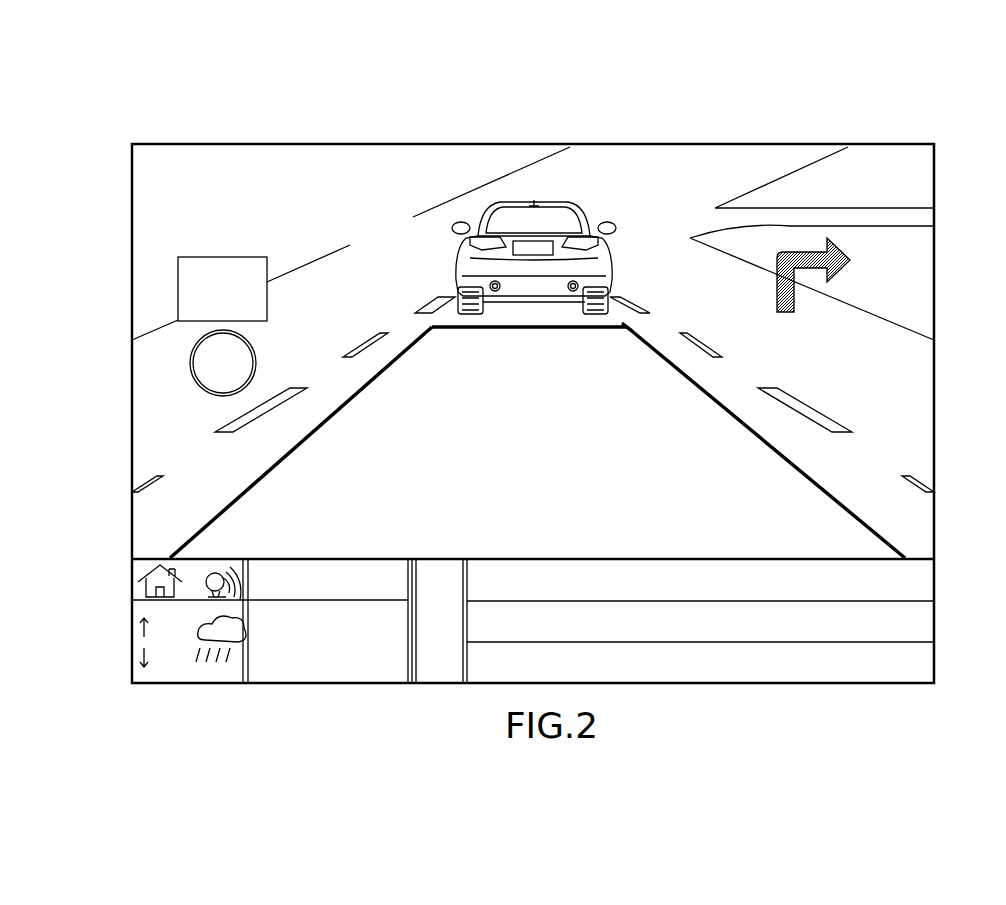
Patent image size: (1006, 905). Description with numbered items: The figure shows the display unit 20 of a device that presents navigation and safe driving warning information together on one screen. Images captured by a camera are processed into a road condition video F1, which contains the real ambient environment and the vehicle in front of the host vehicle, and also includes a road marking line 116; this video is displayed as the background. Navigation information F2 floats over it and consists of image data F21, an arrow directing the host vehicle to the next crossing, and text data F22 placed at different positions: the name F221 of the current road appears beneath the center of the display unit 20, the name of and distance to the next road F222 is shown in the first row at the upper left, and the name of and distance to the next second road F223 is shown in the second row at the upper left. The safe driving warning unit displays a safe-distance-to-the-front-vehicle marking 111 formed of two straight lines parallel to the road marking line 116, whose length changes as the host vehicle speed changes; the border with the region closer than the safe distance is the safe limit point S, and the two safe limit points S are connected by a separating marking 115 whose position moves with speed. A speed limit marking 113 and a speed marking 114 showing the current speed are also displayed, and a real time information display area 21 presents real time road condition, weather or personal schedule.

The display unit 20 is at (905, 143).
The real time information display area 21 is at (247, 657).
The safe-distance-to-the-front-vehicle marking 111 is at (822, 490).
The speed limit marking 113 is at (190, 363).
The speed marking 114 is at (178, 290).
The separating marking 115 is at (553, 330).
The road marking line 116 is at (802, 410).
The safe limit point S is at (618, 327).
The road condition video F1 is at (900, 288).
The navigation information F2 is at (750, 67).
The image data F21 is at (797, 252).
The text data F22 is at (248, 105).
The name of the current road F221 is at (462, 500).
The name of and distance to the next road F222 is at (255, 172).
The name of and distance to the next second road F223 is at (298, 213).